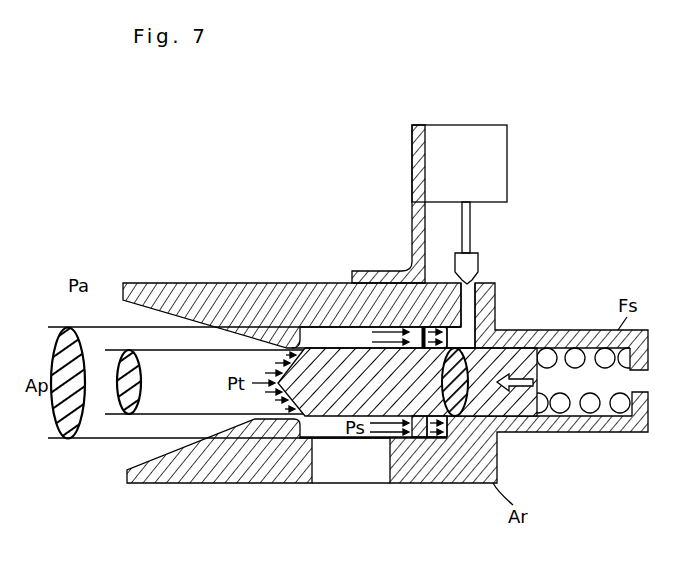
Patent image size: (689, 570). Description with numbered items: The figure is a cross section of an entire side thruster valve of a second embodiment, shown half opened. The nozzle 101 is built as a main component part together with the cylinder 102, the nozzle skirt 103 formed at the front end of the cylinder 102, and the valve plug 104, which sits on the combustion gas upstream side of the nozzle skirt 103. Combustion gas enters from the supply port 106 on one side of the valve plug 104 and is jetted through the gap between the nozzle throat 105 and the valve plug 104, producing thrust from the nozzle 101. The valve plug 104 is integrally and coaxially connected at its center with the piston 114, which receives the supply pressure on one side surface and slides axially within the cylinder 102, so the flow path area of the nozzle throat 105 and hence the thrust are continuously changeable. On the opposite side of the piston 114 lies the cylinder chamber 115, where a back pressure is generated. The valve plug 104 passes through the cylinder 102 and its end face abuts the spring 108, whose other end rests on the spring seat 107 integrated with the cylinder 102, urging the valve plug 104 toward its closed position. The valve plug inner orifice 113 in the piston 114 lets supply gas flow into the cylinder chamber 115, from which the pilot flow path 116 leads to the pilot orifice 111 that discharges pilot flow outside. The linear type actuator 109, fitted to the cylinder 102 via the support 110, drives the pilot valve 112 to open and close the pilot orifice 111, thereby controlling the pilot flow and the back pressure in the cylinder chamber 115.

The nozzle 101 is at (158, 420).
The cylinder 102 is at (445, 455).
The nozzle skirt 103 is at (183, 483).
The valve plug 104 is at (285, 483).
The nozzle throat 105 is at (330, 393).
The supply port 106 is at (345, 462).
The spring seat 107 is at (642, 400).
The spring 108 is at (560, 405).
The linear type actuator 109 is at (507, 162).
The support 110 is at (412, 228).
The pilot orifice 111 is at (478, 283).
The pilot valve 112 is at (478, 260).
The valve plug inner orifice 113 is at (410, 327).
The piston 114 is at (408, 440).
The cylinder chamber 115 is at (485, 327).
The pilot flow path 116 is at (462, 323).